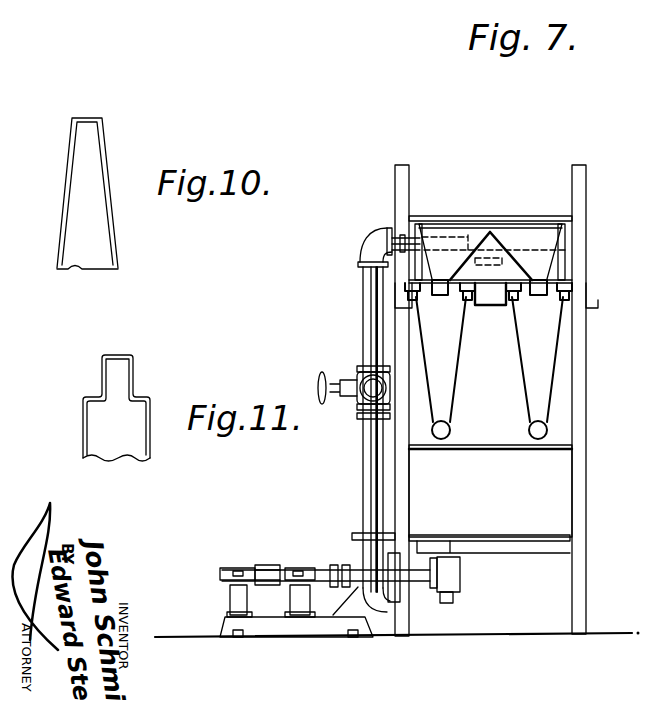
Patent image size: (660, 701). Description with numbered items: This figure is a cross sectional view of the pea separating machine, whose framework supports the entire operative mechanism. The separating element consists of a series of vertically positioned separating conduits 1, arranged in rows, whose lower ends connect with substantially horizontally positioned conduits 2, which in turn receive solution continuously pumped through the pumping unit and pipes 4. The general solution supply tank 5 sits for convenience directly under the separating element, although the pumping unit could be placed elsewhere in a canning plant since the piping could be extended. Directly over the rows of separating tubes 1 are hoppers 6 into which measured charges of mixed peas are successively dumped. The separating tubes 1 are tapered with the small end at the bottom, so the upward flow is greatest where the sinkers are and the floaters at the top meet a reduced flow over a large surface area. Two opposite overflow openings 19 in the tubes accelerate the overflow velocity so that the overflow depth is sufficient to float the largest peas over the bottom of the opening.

The separating conduits 1 is at (535, 365).
The horizontally positioned conduits 2 is at (527, 428).
The pumping unit and pipes 4 is at (373, 548).
The general solution supply tank 5 is at (490, 499).
The hoppers 6 is at (520, 240).
The overflow openings 19 is at (395, 284).